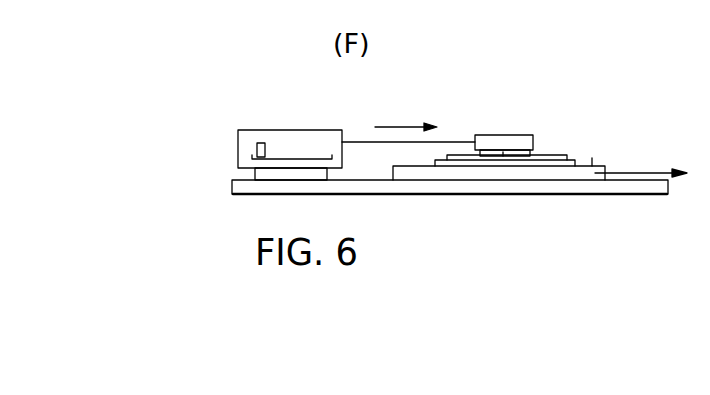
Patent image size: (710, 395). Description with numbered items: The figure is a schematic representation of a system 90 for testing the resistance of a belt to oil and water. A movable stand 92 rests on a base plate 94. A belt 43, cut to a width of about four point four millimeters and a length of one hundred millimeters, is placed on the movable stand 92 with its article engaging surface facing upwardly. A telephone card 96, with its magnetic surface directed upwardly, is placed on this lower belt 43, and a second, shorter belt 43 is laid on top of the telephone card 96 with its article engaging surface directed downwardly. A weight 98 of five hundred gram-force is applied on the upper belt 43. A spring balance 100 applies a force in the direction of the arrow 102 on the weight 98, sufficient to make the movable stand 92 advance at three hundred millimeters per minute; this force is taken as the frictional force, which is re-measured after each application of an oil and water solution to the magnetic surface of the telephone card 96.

The system for testing resistance to oil and water 90 is at (668, 144).
The movable stand 92 is at (592, 165).
The base plate 94 is at (650, 195).
The telephone card 96 is at (550, 155).
The weight 98 is at (490, 133).
The belt 43 is at (503, 152).
The spring balance 100 is at (288, 142).
The arrow 102 is at (400, 127).